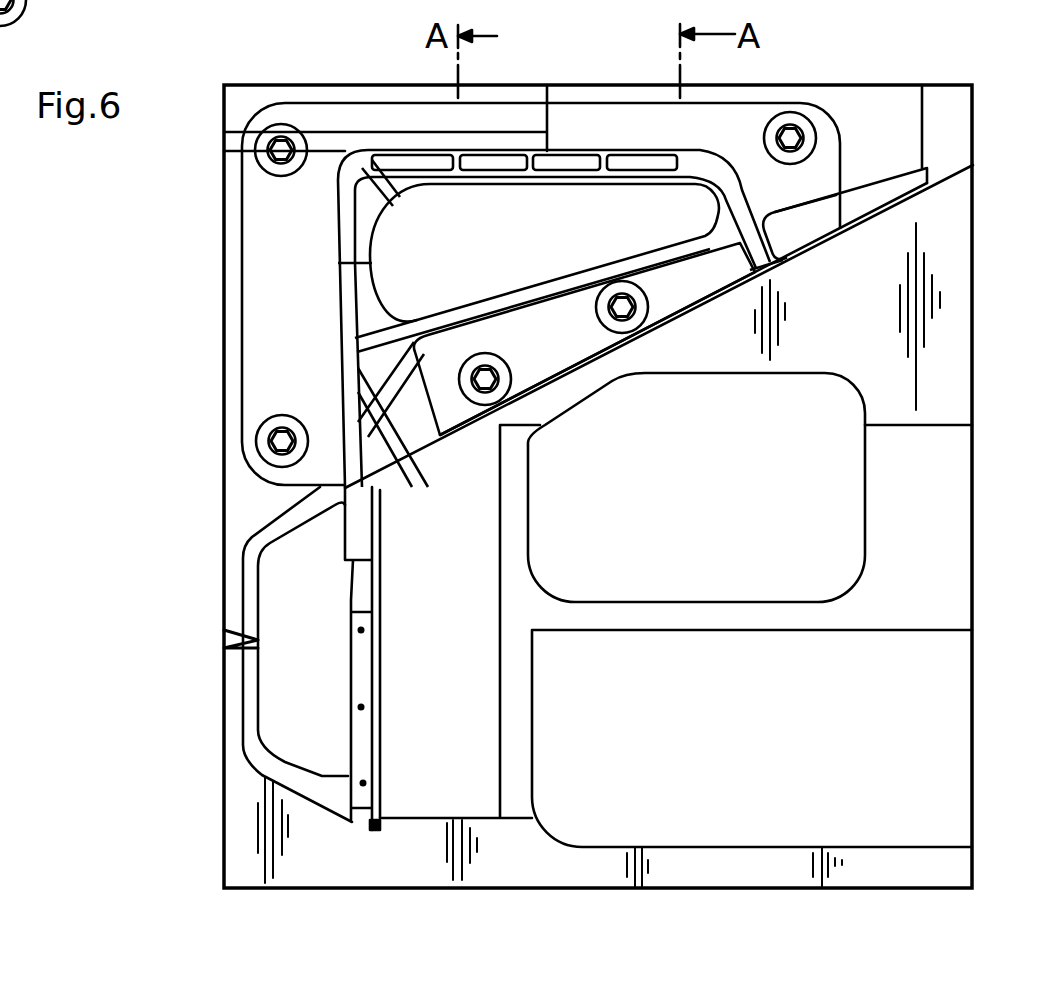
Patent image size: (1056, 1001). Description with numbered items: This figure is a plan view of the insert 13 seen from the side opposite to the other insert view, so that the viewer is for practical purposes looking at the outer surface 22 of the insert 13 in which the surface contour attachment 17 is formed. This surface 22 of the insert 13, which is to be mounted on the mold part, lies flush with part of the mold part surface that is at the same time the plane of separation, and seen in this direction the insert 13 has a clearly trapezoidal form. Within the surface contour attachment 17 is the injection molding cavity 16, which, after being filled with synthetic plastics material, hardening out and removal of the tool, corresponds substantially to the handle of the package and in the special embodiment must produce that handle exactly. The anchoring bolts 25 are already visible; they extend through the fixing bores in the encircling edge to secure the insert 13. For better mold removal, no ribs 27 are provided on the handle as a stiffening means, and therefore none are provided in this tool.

The insert 13 is at (530, 118).
The injection molding cavity 16 is at (642, 153).
The surface contour attachment 17 is at (585, 165).
The outer surface 22 is at (280, 253).
The anchoring bolts 25 is at (790, 137).
The ribs 27 is at (457, 165).